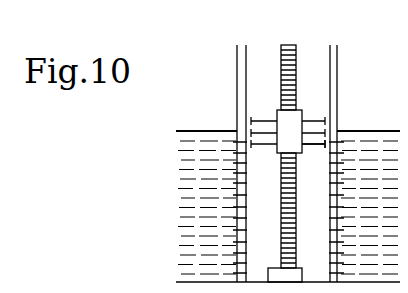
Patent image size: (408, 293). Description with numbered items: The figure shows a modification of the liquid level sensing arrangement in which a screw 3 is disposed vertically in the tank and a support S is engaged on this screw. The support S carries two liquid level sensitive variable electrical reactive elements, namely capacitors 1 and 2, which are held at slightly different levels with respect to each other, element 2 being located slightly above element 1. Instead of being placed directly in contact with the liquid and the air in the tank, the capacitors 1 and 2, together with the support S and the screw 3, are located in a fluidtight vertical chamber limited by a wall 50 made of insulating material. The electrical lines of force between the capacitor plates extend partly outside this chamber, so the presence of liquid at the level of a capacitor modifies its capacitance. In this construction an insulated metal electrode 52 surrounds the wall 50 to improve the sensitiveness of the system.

The liquid level sensitive variable electrical reactive element 1 is at (316, 145).
The liquid level sensitive variable electrical reactive element 2 is at (312, 121).
The screw 3 is at (291, 47).
The wall 50 is at (246, 92).
The insulated metal electrode 52 is at (339, 57).
The support S is at (281, 116).